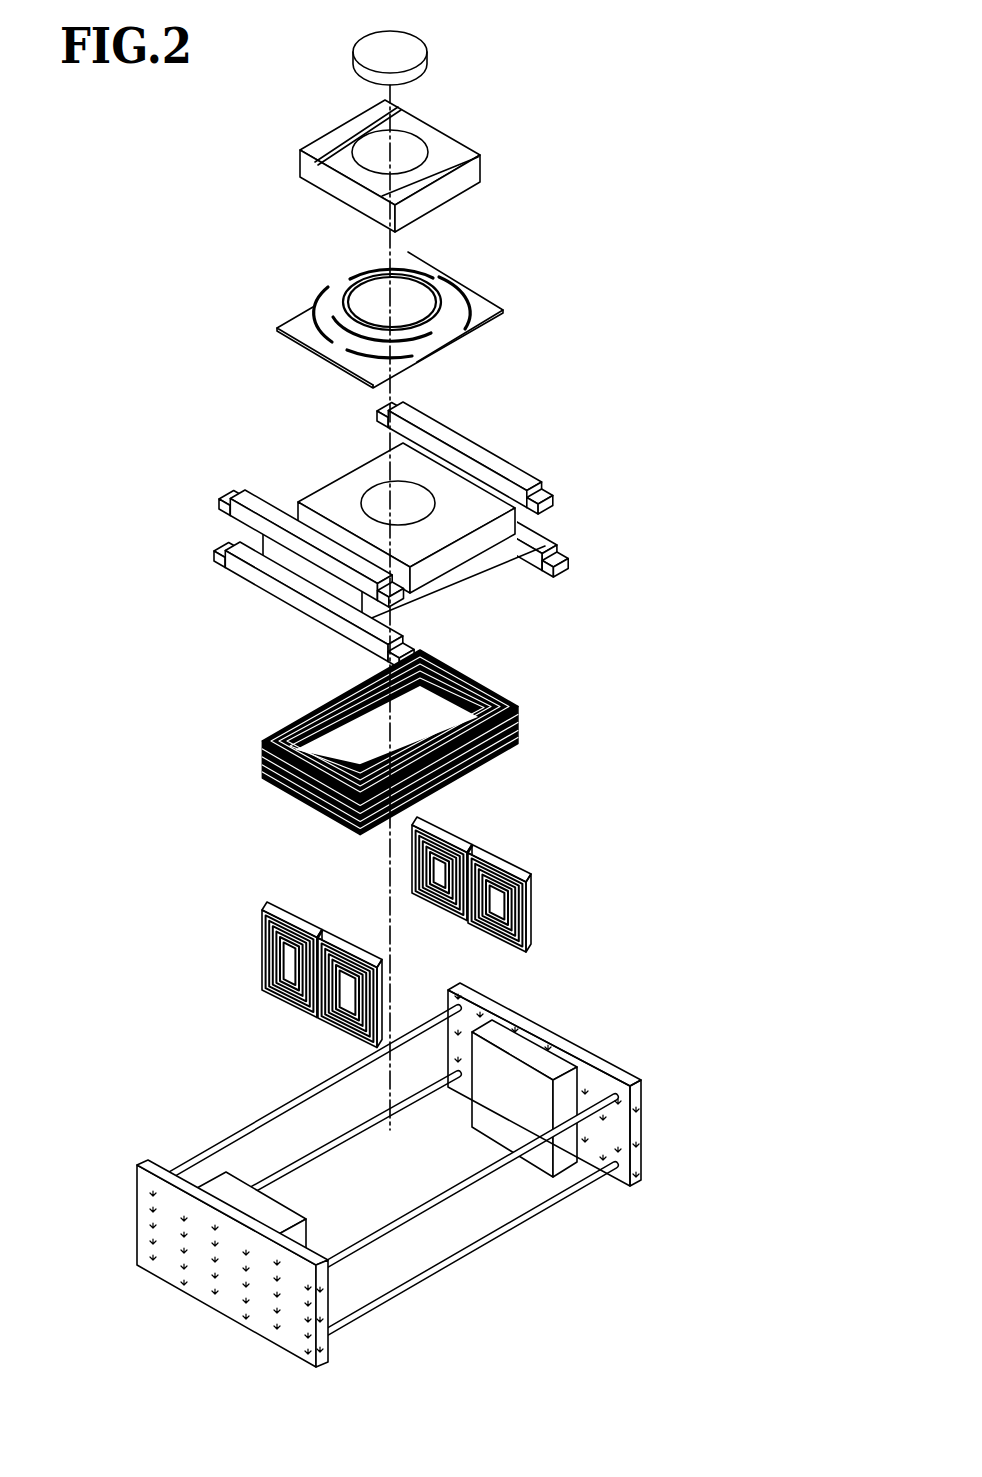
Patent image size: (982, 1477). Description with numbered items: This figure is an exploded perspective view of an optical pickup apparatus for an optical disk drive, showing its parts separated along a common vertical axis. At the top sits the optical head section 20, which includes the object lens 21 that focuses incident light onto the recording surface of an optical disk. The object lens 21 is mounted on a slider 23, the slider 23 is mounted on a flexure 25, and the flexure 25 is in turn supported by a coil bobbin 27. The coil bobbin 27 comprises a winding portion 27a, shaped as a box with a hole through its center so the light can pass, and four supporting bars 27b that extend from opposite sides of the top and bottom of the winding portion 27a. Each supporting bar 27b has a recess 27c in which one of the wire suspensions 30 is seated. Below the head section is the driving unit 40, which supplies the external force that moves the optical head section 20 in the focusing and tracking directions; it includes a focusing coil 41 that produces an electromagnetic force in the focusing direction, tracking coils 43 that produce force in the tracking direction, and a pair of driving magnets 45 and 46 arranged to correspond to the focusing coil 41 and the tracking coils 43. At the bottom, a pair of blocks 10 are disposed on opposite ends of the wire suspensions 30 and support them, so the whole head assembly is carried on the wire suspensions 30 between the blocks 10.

The block 10 is at (636, 1124).
The optical head section 20 is at (653, 63).
The object lens 21 is at (427, 53).
The slider 23 is at (480, 173).
The flexure 25 is at (480, 297).
The coil bobbin 27 is at (503, 433).
The winding portion 27a is at (462, 552).
The supporting bar 27b is at (258, 497).
The recess 27c is at (222, 496).
The wire suspension 30 is at (503, 1227).
The driving unit 40 is at (653, 728).
The focusing coil 41 is at (520, 728).
The tracking coil 43 is at (502, 853).
The driving magnet 45 is at (507, 1042).
The driving magnet 46 is at (220, 1182).